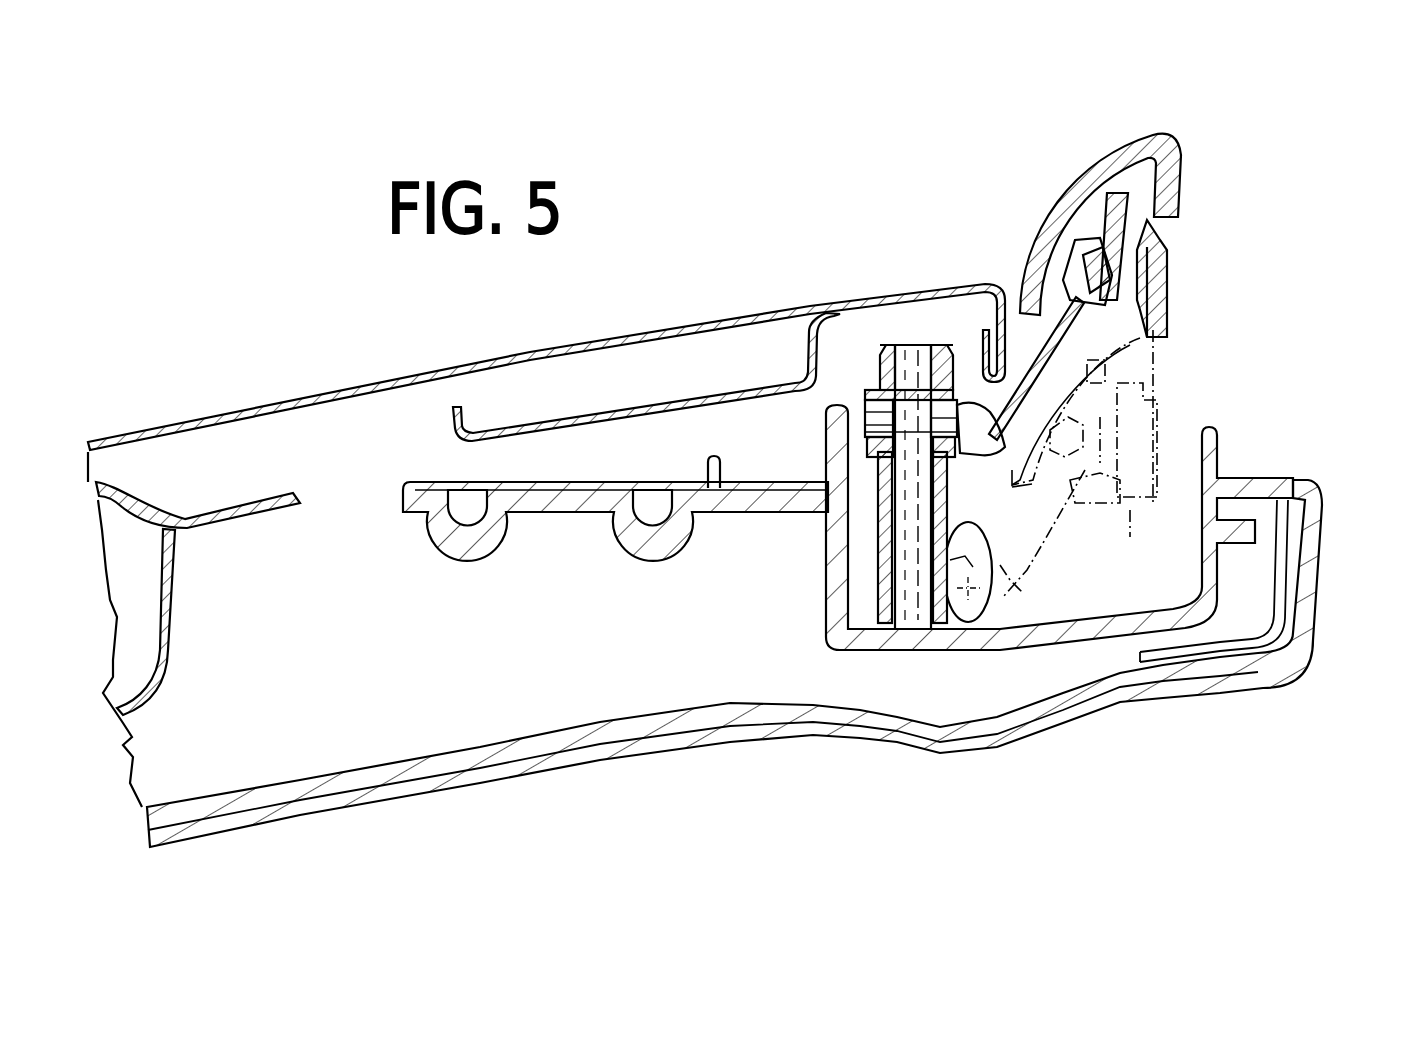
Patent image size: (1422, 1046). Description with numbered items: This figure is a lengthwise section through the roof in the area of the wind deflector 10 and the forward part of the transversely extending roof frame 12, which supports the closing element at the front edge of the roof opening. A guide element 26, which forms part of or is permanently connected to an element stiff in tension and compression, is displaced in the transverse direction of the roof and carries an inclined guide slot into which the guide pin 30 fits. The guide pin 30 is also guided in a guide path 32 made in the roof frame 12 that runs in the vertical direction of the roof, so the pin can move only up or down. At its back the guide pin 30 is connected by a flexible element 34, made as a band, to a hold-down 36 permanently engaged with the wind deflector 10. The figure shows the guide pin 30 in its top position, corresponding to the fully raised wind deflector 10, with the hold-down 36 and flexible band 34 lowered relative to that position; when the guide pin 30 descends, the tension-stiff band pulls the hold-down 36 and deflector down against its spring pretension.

The wind deflector 10 is at (1103, 173).
The roof frame 12 is at (1272, 455).
The guide element 26 is at (990, 580).
The guide pin 30 is at (880, 403).
The guide path 32 is at (912, 600).
The flexible element 34 is at (1040, 363).
The hold-down 36 is at (1113, 218).